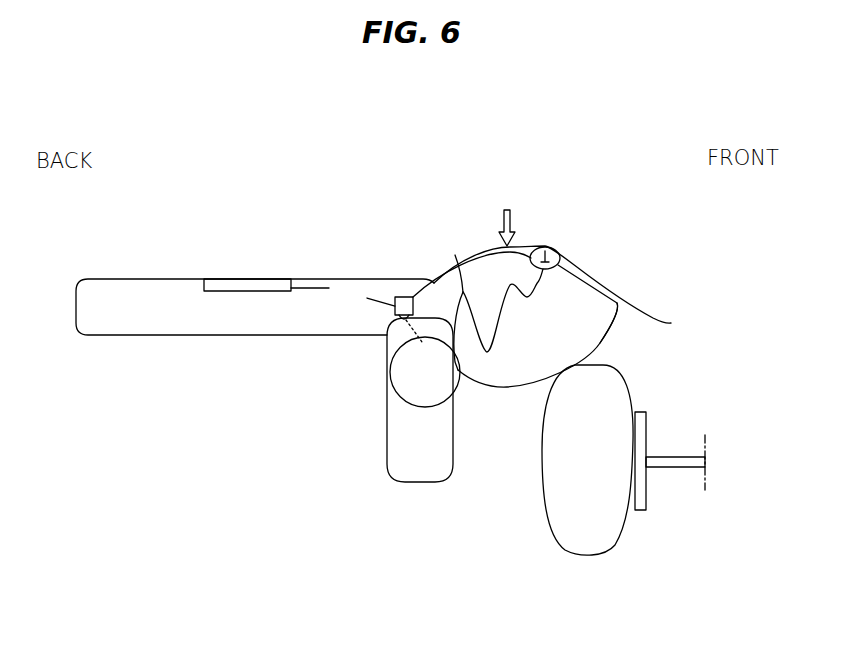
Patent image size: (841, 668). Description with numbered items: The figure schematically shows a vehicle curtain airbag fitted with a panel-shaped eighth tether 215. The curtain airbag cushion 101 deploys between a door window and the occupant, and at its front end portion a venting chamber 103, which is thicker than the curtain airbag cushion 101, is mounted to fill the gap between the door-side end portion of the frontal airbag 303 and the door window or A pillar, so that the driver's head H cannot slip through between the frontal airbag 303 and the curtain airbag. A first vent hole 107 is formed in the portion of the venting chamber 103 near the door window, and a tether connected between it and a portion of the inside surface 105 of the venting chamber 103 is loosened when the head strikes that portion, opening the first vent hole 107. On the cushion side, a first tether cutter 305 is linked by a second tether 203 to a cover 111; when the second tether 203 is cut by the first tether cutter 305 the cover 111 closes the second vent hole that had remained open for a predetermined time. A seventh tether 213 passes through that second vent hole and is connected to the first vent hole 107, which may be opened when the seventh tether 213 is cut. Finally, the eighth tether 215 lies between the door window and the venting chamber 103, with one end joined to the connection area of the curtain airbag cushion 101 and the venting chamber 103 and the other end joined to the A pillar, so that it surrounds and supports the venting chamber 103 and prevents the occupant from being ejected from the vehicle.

The curtain airbag cushion 101 is at (113, 278).
The first tether cutter 305 is at (249, 282).
The second tether 203 is at (310, 288).
The cover 111 is at (407, 297).
The seventh tether 213 is at (455, 255).
The first vent hole 107 is at (548, 247).
The venting chamber 103 is at (577, 297).
The eighth tether 215 is at (660, 313).
The inside surface 105 is at (600, 343).
The frontal airbag 303 is at (590, 557).